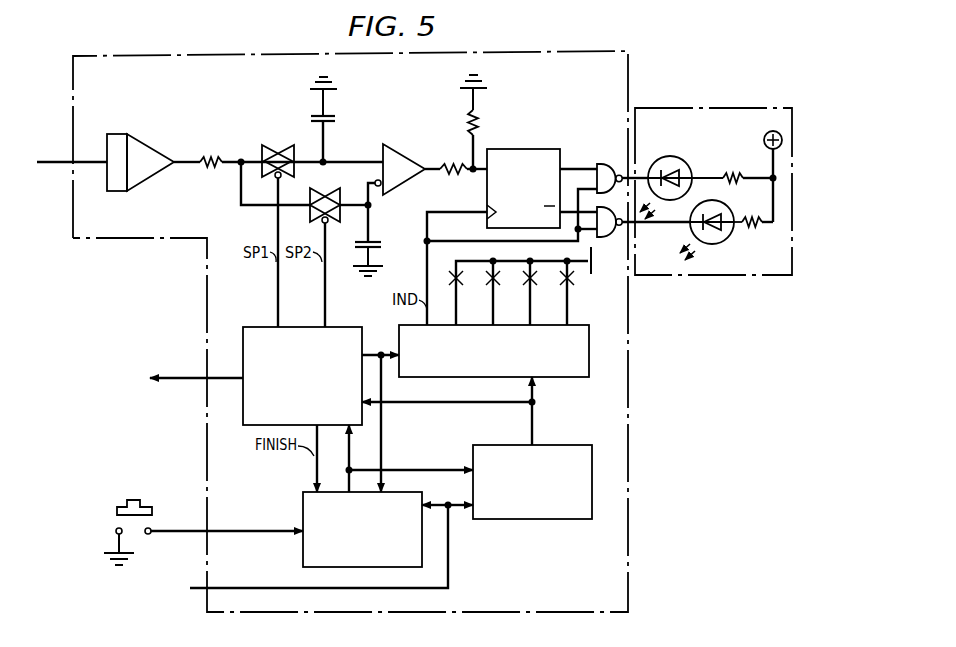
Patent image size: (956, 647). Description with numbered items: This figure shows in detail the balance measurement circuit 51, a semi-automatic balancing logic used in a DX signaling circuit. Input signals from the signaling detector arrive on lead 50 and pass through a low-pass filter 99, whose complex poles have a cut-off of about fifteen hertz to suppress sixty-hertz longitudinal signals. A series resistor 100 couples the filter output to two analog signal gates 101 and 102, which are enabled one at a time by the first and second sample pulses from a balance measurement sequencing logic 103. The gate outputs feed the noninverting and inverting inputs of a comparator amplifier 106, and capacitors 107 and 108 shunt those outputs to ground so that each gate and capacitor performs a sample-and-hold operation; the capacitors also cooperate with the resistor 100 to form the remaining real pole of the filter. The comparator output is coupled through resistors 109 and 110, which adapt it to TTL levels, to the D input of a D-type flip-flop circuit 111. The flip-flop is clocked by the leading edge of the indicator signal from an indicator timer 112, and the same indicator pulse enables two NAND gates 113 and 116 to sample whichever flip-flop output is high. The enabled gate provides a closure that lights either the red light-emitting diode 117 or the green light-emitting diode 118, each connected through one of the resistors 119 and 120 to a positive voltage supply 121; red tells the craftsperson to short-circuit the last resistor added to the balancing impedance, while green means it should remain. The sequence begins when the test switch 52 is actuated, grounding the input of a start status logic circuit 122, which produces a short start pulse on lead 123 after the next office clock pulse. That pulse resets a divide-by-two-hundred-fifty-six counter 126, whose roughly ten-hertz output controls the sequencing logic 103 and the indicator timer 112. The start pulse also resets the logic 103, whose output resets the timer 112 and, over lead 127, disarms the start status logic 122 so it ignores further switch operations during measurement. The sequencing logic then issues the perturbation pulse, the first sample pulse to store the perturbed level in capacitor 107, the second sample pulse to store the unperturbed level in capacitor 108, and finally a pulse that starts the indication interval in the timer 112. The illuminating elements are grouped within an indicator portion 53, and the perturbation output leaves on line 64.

The lead 50 is at (64, 160).
The balance measurement circuit 51 is at (603, 51).
The test switch 52 is at (125, 507).
The indicator assembly 53 is at (760, 108).
The perturbation output line 64 is at (194, 376).
The low-pass filter 99 is at (153, 160).
The series resistor 100 is at (231, 150).
The analog signal gate 101 is at (292, 226).
The analog signal gate 102 is at (303, 243).
The balance measurement sequencing logic 103 is at (254, 327).
The comparator amplifier 106 is at (381, 170).
The capacitor 107 is at (336, 121).
The capacitor 108 is at (380, 239).
The resistor 109 is at (463, 180).
The resistor 110 is at (482, 124).
The D-type flip-flop circuit 111 is at (536, 149).
The indicator timer 112 is at (572, 377).
The NAND gate 113 is at (622, 167).
The NAND gate 116 is at (626, 228).
The light-emitting diode 117 is at (680, 158).
The light-emitting diode 118 is at (726, 240).
The resistor 119 is at (748, 167).
The resistor 120 is at (753, 211).
The positive voltage supply 121 is at (772, 167).
The start status logic circuit 122 is at (302, 551).
The lead 123 is at (345, 450).
The divide-by-256 counter 126 is at (560, 519).
The lead 127 is at (384, 450).